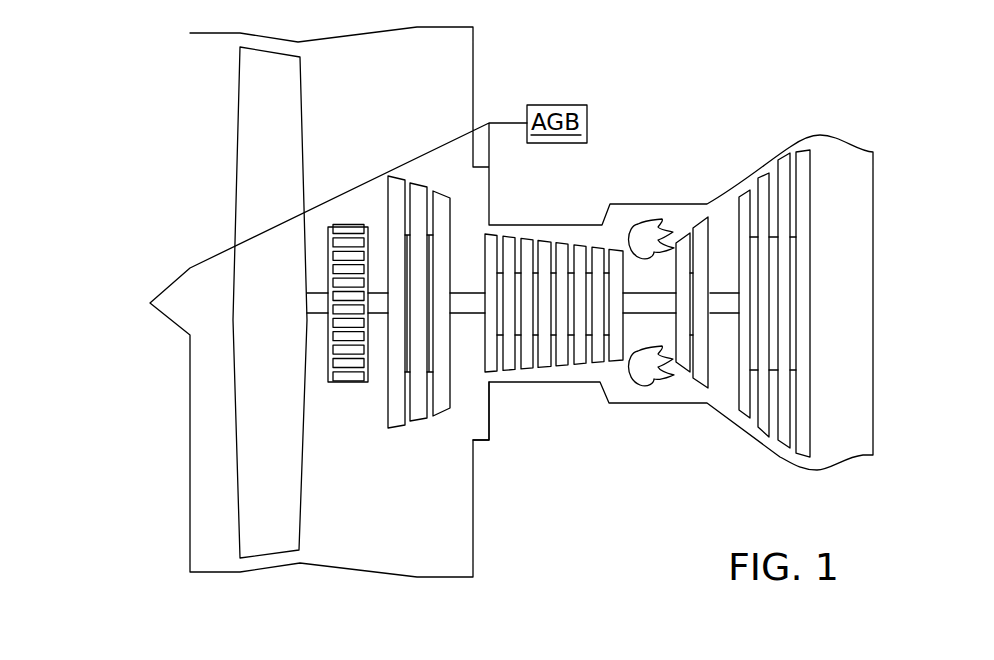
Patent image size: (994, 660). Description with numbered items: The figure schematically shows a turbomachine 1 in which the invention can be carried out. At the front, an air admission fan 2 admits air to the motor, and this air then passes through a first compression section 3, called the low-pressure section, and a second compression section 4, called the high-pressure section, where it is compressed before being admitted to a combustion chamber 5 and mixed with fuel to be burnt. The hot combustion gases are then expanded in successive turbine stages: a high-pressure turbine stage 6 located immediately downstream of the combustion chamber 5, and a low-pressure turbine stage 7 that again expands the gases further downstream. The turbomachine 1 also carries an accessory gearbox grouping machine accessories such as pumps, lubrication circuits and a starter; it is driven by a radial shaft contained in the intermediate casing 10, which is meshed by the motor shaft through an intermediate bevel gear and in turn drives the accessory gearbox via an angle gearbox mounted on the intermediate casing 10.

The turbomachine 1 is at (140, 511).
The air admission fan 2 is at (264, 540).
The first compression section 3 is at (450, 188).
The second compression section 4 is at (628, 258).
The combustion chamber 5 is at (650, 385).
The high-pressure turbine stage 6 is at (703, 220).
The low-pressure turbine stage 7 is at (781, 175).
The intermediate casing 10 is at (489, 440).